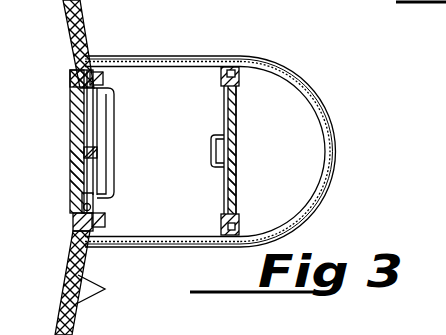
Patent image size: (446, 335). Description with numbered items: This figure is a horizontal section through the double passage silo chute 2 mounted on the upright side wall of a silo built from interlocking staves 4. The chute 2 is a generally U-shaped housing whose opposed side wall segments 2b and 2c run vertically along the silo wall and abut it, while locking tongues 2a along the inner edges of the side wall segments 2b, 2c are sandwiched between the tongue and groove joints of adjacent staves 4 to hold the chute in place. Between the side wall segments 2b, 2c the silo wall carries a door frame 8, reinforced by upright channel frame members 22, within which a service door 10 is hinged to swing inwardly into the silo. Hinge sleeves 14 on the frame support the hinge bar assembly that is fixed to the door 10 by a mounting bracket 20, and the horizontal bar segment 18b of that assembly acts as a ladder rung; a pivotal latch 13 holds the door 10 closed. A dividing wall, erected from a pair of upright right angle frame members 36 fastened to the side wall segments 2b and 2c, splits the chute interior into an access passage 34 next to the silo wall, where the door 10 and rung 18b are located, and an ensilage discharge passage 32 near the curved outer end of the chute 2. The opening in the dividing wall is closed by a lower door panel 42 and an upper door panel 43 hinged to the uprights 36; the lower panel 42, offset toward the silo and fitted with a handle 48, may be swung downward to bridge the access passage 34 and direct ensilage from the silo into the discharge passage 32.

The silo chute 2 is at (230, 155).
The locking tongues 2a is at (68, 44).
The side wall segment 2b is at (148, 56).
The side wall segment 2c is at (172, 247).
The staves 4 is at (105, 289).
The door frame 8 is at (72, 74).
The door 10 is at (70, 100).
The pivotal latch 13 is at (97, 152).
The hinge sleeves 14 is at (72, 122).
The horizontal bar segment 18b is at (115, 105).
The mounting bracket 20 is at (78, 197).
The channel frame member 22 is at (103, 78).
The ensilage discharge passage 32 is at (306, 145).
The access passage 34 is at (148, 198).
The right angle frame member 36 is at (241, 82).
The lower door panel 42 is at (224, 178).
The upper door panel 43 is at (237, 157).
The handle 48 is at (214, 141).